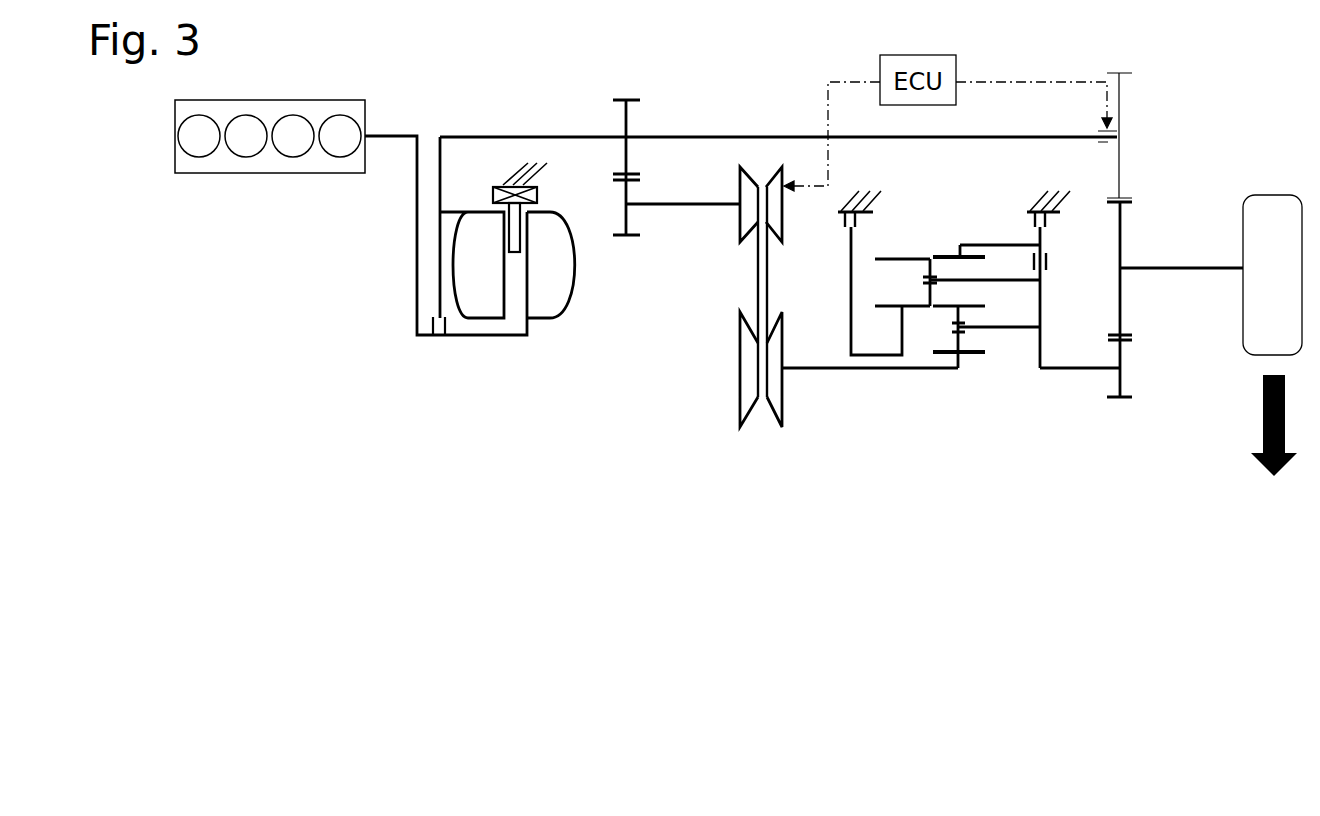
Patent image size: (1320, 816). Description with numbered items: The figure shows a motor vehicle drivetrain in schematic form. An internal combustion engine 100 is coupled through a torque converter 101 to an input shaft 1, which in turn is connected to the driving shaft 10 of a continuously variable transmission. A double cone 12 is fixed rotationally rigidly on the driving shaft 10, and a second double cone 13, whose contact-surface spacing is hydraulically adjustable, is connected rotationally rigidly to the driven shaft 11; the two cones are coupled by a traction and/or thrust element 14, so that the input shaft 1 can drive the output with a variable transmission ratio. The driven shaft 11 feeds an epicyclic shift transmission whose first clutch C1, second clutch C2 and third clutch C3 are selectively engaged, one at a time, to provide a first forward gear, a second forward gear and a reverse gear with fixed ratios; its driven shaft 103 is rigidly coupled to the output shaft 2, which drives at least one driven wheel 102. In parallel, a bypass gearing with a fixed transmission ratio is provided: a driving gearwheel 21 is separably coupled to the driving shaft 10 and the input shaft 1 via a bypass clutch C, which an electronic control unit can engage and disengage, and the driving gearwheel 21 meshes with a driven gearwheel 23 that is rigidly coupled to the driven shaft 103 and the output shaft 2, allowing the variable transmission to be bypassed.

The internal combustion engine 100 is at (225, 162).
The input shaft 1 is at (483, 137).
The torque converter 101 is at (505, 362).
The driving shaft 10 is at (660, 204).
The double cone 12 is at (745, 215).
The traction and/or thrust element 14 is at (763, 250).
The double cone 13 is at (773, 358).
The driven shaft 11 is at (830, 370).
The driven shaft of the epicyclic gearing 103 is at (1072, 370).
The first clutch C1 is at (858, 222).
The third clutch C3 is at (1033, 228).
The second clutch C2 is at (1048, 262).
The bypass clutch C is at (1112, 140).
The driving gearwheel 21 is at (1122, 115).
The driven gearwheel 23 is at (1122, 256).
The output shaft 2 is at (1143, 272).
The driven wheel 102 is at (1258, 322).